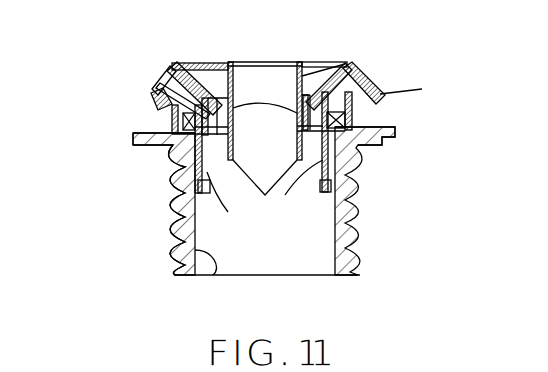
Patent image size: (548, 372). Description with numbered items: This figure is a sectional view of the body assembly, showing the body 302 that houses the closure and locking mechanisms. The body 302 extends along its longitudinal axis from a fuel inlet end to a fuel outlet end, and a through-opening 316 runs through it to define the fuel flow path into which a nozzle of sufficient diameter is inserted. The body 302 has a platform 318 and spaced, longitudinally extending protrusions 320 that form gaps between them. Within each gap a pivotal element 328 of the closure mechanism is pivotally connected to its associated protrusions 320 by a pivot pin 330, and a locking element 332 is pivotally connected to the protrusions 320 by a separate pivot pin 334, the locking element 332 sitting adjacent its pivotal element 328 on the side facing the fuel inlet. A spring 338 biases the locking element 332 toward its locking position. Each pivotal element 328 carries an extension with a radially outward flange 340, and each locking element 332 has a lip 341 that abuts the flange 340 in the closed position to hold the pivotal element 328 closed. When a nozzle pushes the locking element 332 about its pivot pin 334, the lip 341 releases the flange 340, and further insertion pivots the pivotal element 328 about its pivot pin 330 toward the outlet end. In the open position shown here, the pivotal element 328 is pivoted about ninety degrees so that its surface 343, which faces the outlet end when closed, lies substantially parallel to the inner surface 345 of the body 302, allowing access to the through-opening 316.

The body 302 is at (368, 212).
The through-opening 316 is at (281, 247).
The platform 318 is at (381, 147).
The protrusion 320 is at (214, 64).
The pivotal element 328 is at (253, 167).
The pivot pin 330 is at (137, 140).
The locking element 332 is at (256, 70).
The pivot pin 334 is at (150, 78).
The spring 338 is at (370, 68).
The flange 340 is at (178, 108).
The lip 341 is at (152, 97).
The surface 343 is at (178, 184).
The inner surface 345 is at (208, 279).